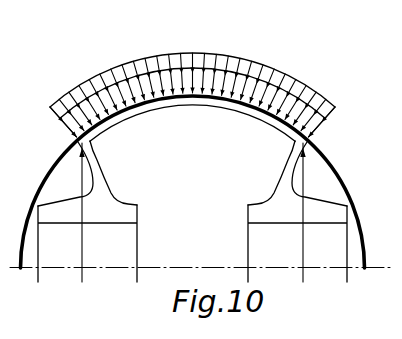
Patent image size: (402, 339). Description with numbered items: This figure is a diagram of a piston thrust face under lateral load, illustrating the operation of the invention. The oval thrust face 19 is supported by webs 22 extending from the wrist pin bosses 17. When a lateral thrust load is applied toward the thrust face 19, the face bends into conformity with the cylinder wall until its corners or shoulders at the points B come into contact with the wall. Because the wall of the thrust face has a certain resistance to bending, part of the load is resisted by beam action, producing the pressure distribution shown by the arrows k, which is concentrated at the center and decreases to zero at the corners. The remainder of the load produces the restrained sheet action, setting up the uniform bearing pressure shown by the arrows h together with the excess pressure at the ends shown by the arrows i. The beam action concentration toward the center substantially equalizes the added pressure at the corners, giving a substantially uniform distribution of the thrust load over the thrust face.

The wrist pin boss 17 is at (262, 217).
The thrust face 19 is at (200, 106).
The web 22 is at (290, 167).
The arrows h is at (152, 73).
The arrows k is at (193, 55).
The arrows i is at (331, 112).
The points B is at (314, 141).